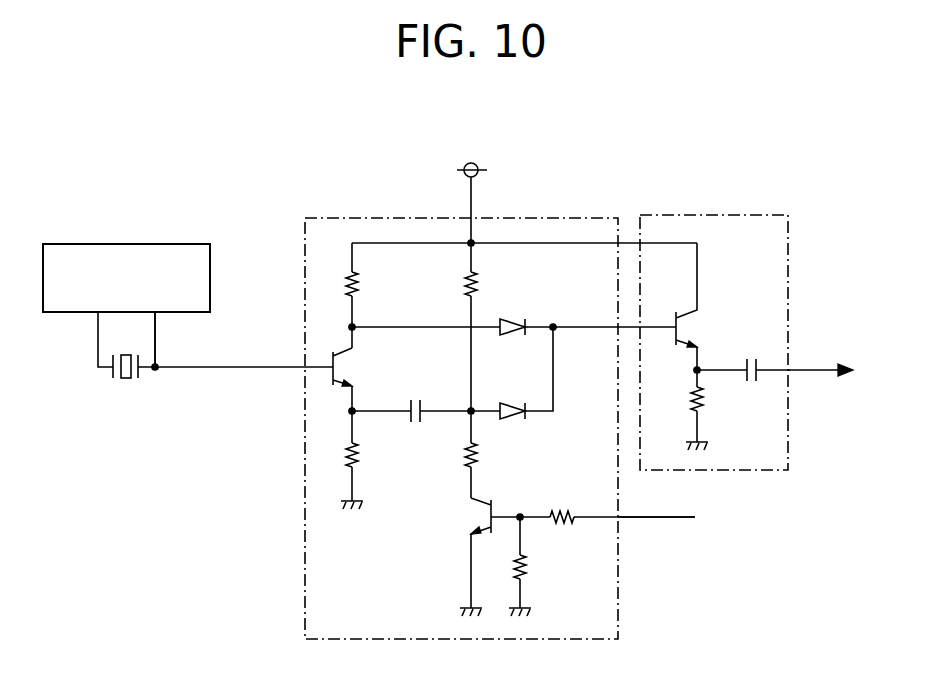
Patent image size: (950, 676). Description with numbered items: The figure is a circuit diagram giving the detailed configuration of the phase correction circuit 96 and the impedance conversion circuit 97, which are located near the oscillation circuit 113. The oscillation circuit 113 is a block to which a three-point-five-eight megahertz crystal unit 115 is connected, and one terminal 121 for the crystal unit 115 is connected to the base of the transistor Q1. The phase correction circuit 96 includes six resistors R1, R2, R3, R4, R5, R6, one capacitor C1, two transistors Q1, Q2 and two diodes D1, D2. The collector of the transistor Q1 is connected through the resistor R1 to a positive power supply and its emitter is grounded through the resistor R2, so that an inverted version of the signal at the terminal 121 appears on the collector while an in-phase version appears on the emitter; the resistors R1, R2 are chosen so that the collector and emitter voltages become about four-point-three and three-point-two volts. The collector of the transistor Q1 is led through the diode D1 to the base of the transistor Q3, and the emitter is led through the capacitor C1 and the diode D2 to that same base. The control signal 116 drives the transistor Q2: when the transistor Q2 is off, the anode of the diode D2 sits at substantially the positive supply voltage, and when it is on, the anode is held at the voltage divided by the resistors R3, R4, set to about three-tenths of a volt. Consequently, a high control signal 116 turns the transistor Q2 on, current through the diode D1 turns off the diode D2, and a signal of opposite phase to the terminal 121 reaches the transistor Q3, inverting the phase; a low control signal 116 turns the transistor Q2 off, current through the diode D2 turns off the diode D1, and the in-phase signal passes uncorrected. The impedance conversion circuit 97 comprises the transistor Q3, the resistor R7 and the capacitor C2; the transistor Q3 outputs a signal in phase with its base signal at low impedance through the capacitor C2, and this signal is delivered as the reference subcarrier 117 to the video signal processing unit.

The phase correction circuit 96 is at (305, 617).
The impedance conversion circuit 97 is at (788, 228).
The oscillation circuit 113 is at (210, 272).
The crystal unit 115 is at (126, 379).
The control signal 116 is at (645, 518).
The reference subcarrier 117 is at (795, 371).
The terminal 121 is at (155, 313).
The transistor Q1 is at (361, 369).
The transistor Q2 is at (474, 557).
The transistor Q3 is at (674, 306).
The resistor R1 is at (372, 285).
The resistor R2 is at (370, 460).
The resistor R3 is at (450, 327).
The resistor R4 is at (491, 454).
The resistor R5 is at (541, 566).
The resistor R6 is at (607, 500).
The resistor R7 is at (678, 410).
The capacitor C1 is at (411, 397).
The capacitor C2 is at (743, 355).
The diode D1 is at (514, 310).
The diode D2 is at (512, 373).